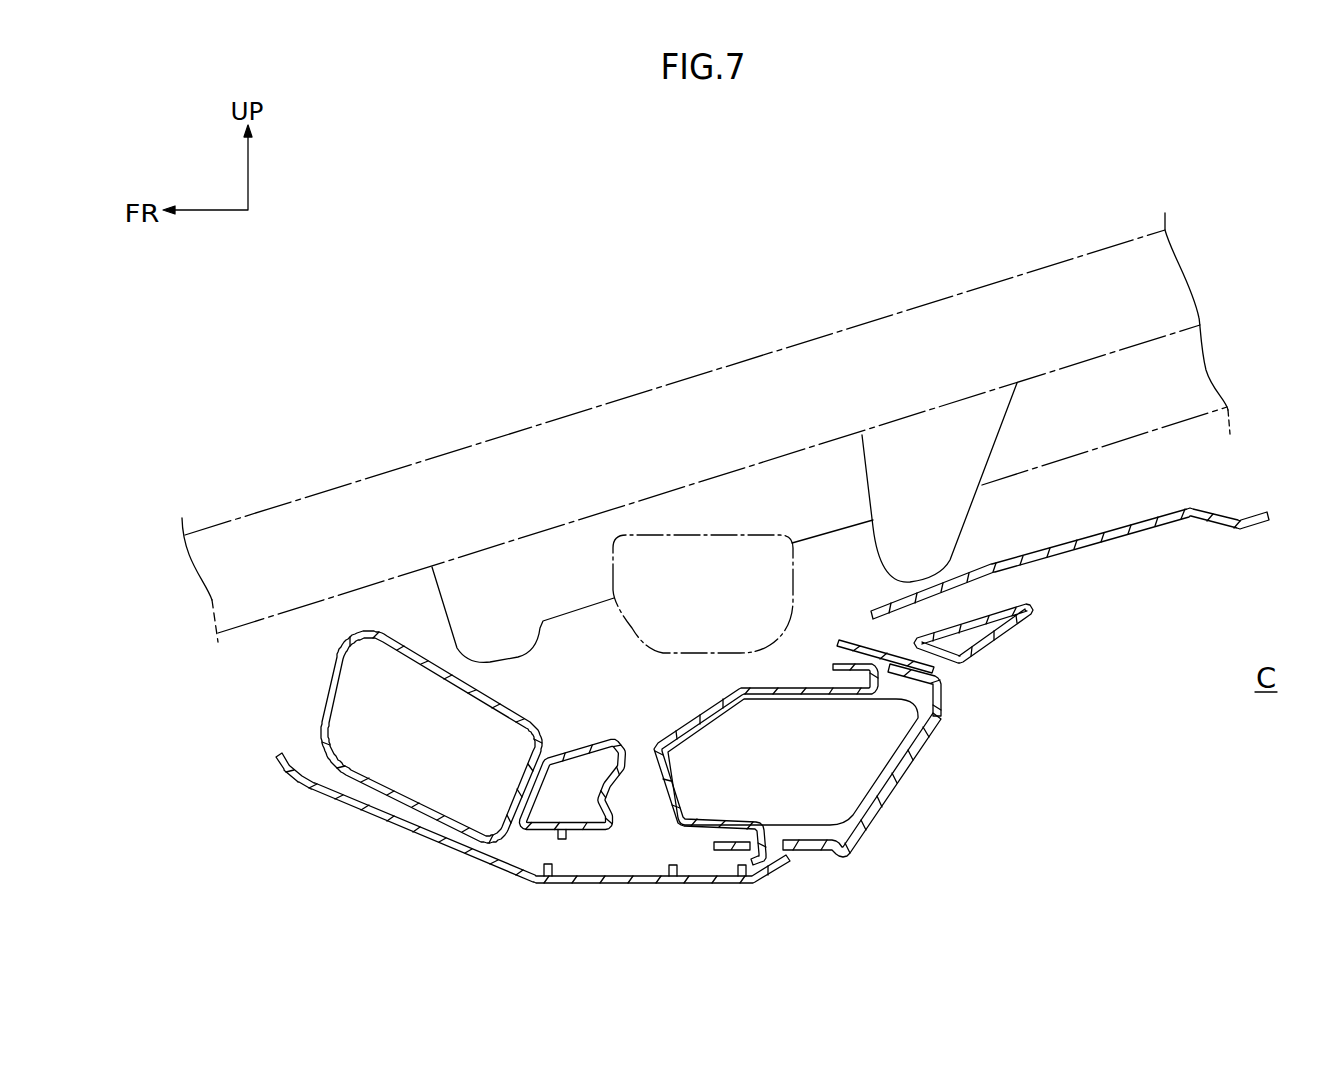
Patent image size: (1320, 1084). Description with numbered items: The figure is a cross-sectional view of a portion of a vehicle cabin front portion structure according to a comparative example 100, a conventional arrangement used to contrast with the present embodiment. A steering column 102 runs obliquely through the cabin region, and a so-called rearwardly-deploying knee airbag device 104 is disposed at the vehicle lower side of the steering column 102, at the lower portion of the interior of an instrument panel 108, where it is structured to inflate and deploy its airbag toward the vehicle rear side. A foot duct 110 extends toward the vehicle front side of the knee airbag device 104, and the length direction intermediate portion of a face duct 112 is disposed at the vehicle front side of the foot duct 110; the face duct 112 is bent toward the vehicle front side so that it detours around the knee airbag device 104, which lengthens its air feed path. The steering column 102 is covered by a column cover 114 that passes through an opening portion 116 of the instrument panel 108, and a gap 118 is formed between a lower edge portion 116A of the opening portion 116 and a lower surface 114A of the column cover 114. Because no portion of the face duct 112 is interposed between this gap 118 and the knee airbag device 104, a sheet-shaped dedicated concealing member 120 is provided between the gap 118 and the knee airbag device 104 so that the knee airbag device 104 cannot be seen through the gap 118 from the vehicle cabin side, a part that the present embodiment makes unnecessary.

The comparative example 100 is at (1117, 792).
The steering column 102 is at (675, 383).
The knee airbag device 104 is at (777, 687).
The instrument panel 108 is at (643, 888).
The foot duct 110 is at (590, 745).
The face duct 112 is at (410, 652).
The column cover 114 is at (1070, 582).
The lower surface 114A is at (1113, 548).
The opening portion 116 is at (1008, 678).
The lower edge portion 116A is at (1041, 600).
The gap 118 is at (1070, 575).
The concealing member 120 is at (855, 644).